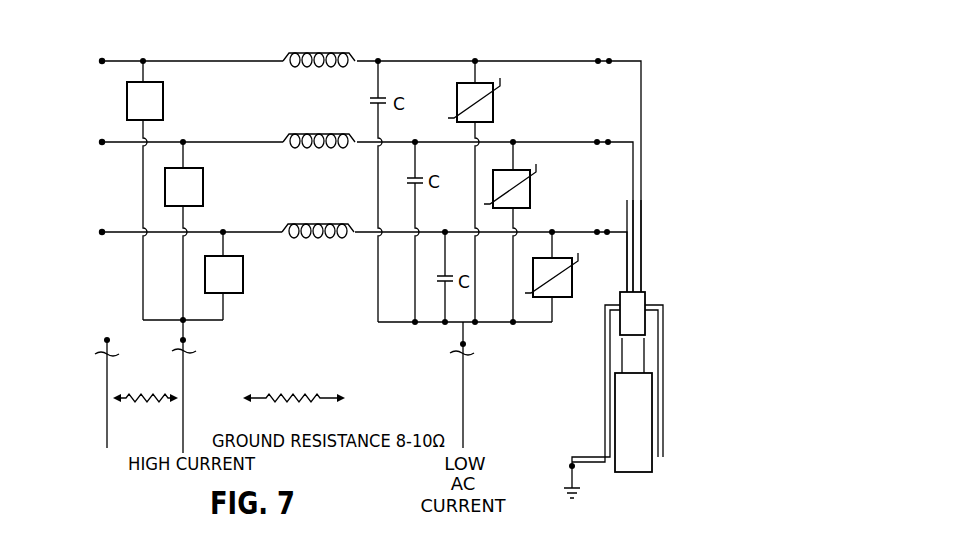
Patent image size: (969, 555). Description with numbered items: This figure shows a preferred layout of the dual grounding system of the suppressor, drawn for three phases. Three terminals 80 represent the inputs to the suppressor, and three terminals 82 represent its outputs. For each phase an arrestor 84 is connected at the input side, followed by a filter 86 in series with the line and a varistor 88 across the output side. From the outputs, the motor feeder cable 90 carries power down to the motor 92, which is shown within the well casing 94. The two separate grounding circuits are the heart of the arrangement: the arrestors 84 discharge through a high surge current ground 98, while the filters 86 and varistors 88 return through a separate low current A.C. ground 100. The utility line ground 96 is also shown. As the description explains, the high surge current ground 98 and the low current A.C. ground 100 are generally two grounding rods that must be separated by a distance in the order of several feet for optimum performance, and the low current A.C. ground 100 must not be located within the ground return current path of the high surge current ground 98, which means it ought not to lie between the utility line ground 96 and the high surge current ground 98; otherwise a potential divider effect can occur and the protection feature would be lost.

The terminals 80 is at (99, 72).
The terminals 82 is at (646, 188).
The arrestors 84 is at (164, 112).
The filters 86 is at (278, 52).
The varistors 88 is at (494, 116).
The motor feeder cable 90 is at (622, 320).
The motor 92 is at (628, 402).
The well casing 94 is at (605, 438).
The utility line ground 96 is at (113, 372).
The high surge current ground 98 is at (192, 362).
The low current A.C. ground 100 is at (464, 362).